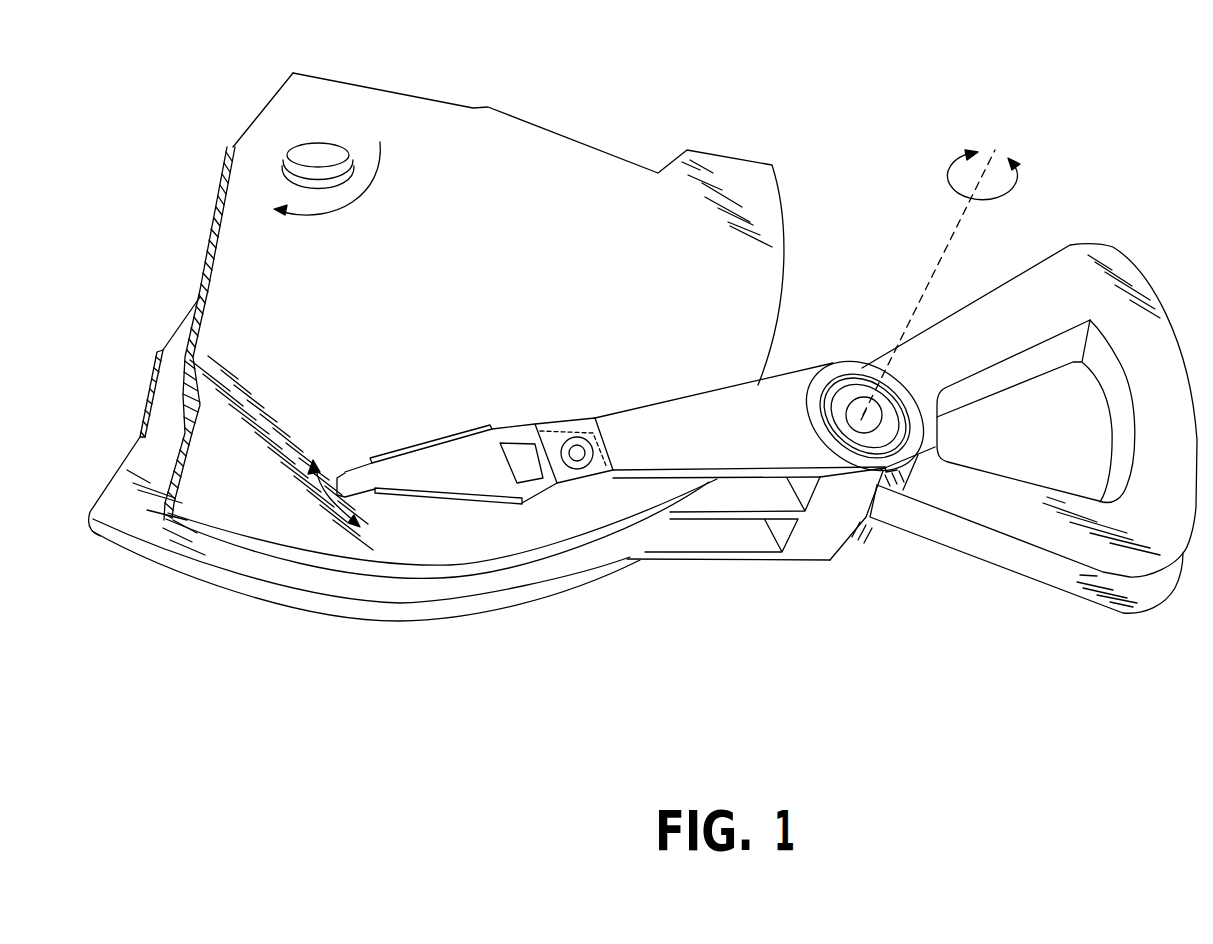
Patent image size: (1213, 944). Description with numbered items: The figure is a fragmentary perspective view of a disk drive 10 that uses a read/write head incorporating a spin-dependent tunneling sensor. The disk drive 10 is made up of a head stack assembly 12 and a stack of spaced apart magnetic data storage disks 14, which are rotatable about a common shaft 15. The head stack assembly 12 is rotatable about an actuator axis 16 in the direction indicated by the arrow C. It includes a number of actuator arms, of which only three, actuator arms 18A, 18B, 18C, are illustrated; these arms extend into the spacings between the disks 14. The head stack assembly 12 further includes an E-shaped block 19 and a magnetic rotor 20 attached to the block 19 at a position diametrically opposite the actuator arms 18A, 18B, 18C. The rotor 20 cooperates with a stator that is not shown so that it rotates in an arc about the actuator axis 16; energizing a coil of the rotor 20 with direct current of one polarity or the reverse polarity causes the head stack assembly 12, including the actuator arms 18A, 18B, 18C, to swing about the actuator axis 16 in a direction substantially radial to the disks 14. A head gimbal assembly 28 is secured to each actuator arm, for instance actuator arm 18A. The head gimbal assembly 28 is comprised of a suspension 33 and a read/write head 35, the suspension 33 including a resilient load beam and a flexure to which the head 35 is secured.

The disk drive 10 is at (627, 30).
The head stack assembly 12 is at (896, 405).
The magnetic data storage disks 14 is at (524, 214).
The common shaft 15 is at (300, 153).
The actuator axis 16 is at (960, 226).
The actuator arm 18A is at (718, 390).
The actuator arm 18B is at (707, 512).
The actuator arm 18C is at (740, 552).
The E-shaped block 19 is at (837, 545).
The magnetic rotor 20 is at (1013, 562).
The head gimbal assembly 28 is at (460, 448).
The suspension 33 is at (474, 485).
The read/write head 35 is at (333, 488).